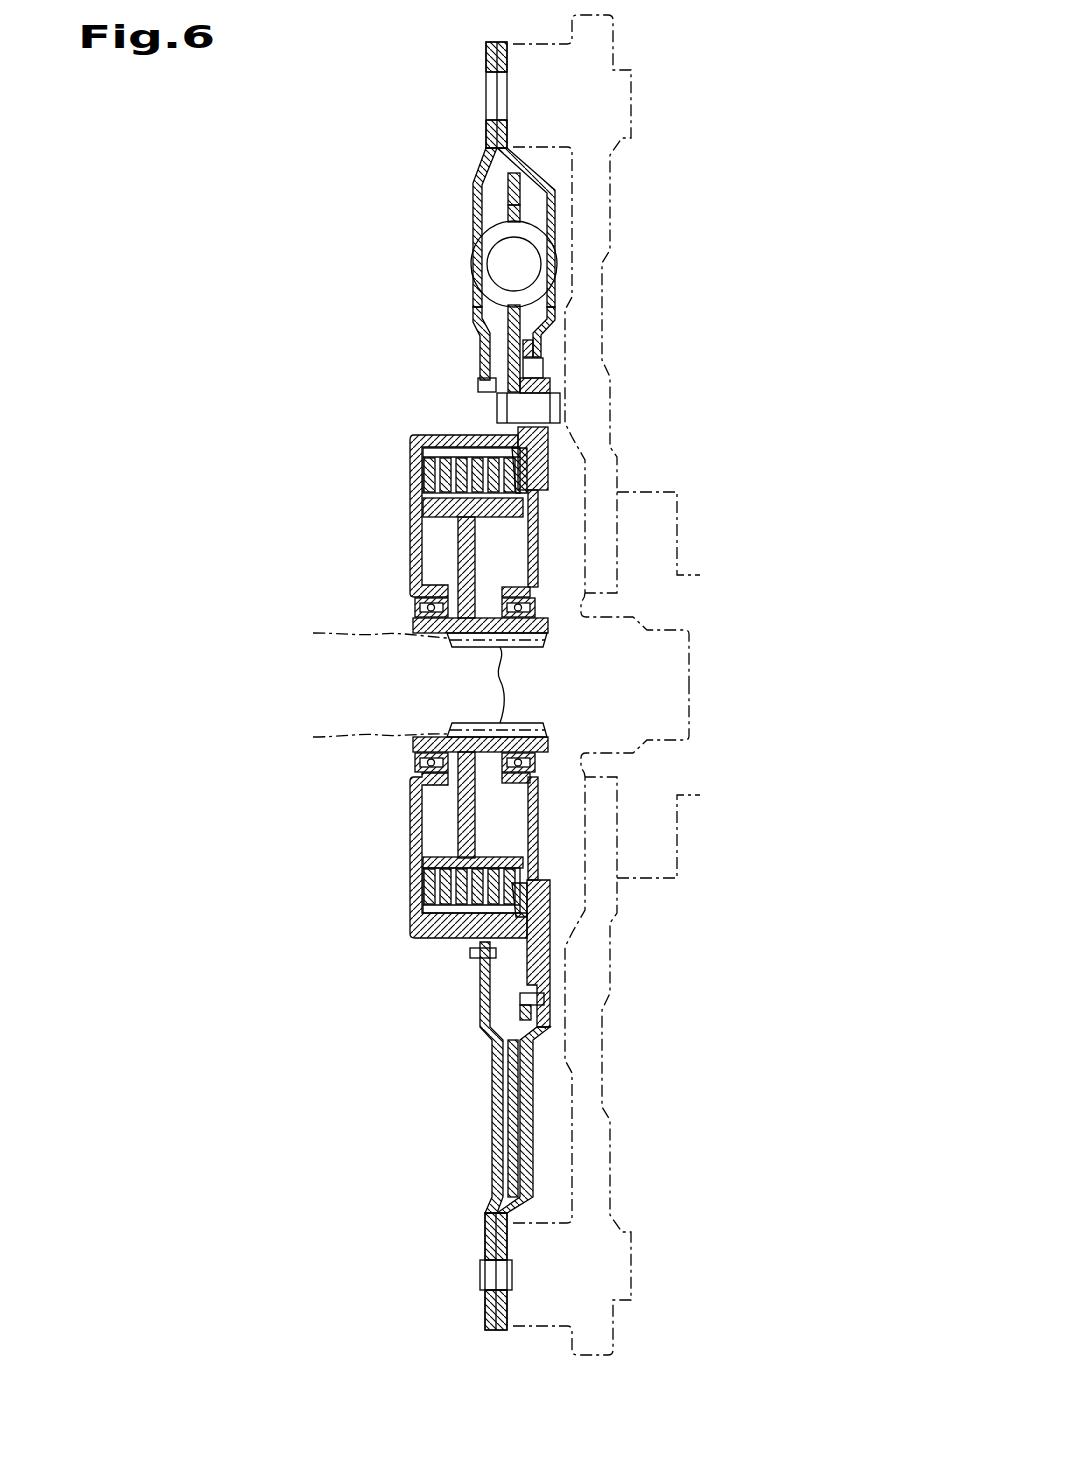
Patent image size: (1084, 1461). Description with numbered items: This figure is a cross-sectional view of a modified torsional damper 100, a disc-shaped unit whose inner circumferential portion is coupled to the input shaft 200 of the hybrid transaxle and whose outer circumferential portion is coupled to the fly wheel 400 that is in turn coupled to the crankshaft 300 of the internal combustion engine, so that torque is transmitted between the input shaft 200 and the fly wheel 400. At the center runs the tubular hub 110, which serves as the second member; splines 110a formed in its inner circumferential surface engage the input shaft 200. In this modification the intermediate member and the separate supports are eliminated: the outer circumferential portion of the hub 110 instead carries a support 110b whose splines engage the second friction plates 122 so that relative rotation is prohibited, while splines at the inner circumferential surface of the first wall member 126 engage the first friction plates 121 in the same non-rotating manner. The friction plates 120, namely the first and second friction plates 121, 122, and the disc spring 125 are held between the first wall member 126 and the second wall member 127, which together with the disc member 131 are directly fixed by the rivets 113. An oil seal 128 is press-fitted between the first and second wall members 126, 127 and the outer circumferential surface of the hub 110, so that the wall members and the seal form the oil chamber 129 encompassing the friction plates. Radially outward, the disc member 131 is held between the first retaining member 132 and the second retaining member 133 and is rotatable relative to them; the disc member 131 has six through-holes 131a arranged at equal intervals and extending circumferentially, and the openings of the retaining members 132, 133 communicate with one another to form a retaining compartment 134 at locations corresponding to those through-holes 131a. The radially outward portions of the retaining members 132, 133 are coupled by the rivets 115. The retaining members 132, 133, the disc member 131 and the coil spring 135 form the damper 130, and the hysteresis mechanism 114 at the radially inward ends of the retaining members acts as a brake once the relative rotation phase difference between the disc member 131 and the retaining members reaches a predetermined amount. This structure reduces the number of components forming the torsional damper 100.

The torsional damper 100 is at (302, 161).
The hub 110 is at (445, 644).
The splines 110a is at (467, 685).
The support 110b is at (520, 507).
The rivets 113 is at (497, 409).
The hysteresis mechanism 114 is at (545, 366).
The rivets 115 is at (480, 1275).
The friction plates 120 is at (499, 681).
The first friction plates 121 is at (423, 468).
The second friction plates 122 is at (520, 872).
The disc spring 125 is at (548, 478).
The first wall member 126 is at (410, 534).
The second wall member 127 is at (540, 534).
The oil seal 128 is at (415, 606).
The oil chamber 129 is at (512, 576).
The damper 130 is at (472, 265).
The disc member 131 is at (523, 193).
The through-holes 131a is at (521, 214).
The first retaining member 132 is at (486, 125).
The second retaining member 133 is at (507, 126).
The retaining compartment 134 is at (480, 222).
The coil spring 135 is at (473, 273).
The input shaft 200 is at (313, 632).
The crankshaft 300 is at (700, 577).
The fly wheel 400 is at (612, 310).